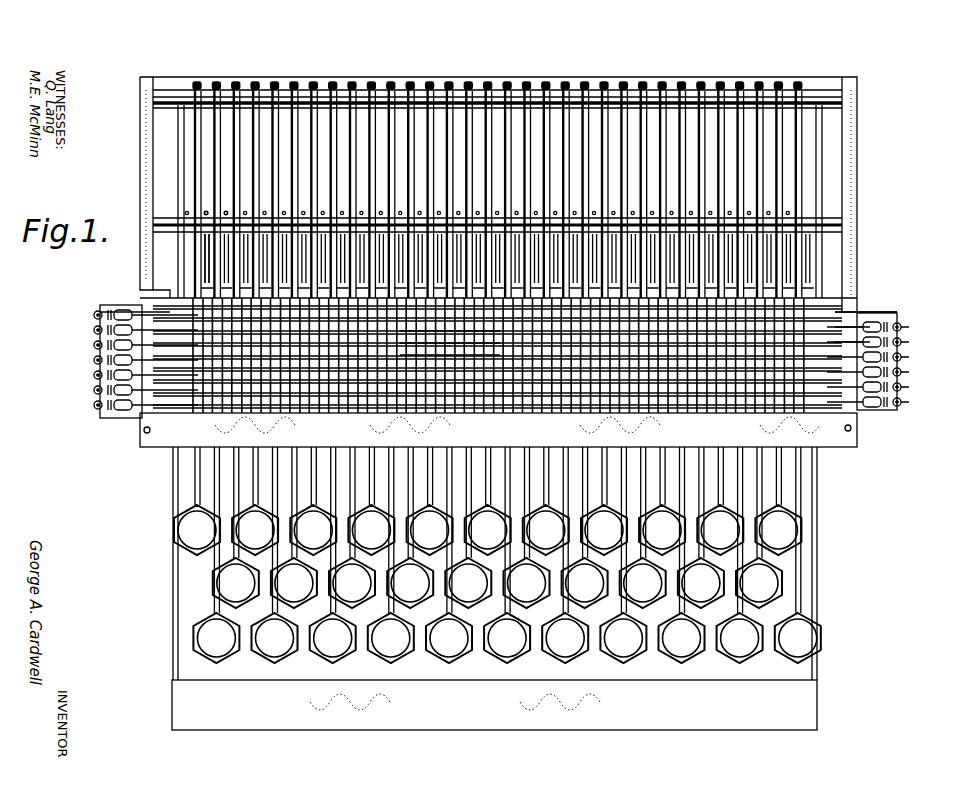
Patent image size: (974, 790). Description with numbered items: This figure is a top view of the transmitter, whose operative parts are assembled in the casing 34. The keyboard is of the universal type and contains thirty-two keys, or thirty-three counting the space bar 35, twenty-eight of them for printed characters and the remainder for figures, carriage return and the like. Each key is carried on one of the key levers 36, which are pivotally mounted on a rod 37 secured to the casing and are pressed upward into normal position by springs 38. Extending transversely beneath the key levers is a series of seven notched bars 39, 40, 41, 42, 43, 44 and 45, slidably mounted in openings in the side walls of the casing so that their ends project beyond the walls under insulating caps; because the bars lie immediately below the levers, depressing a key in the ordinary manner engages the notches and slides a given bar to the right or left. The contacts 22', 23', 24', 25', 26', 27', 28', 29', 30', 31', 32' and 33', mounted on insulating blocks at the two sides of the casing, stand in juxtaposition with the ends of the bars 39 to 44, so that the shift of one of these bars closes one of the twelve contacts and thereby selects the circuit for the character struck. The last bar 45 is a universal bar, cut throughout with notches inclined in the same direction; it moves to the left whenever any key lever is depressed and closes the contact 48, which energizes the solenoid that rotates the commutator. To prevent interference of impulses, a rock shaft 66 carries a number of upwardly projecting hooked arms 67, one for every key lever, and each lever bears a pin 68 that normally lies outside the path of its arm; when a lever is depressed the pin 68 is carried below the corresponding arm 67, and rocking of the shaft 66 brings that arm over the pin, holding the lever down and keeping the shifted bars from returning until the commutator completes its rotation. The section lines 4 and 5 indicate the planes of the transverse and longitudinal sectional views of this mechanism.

The section line 4— 4 is at (187, 28).
The section line 5— 5 is at (95, 321).
The contact 22' is at (120, 421).
The contact 23' is at (120, 403).
The contact 24' is at (122, 386).
The contact 25' is at (888, 413).
The contact 26' is at (888, 396).
The contact 27' is at (888, 378).
The contact 28' is at (115, 370).
The contact 29' is at (116, 353).
The contact 30' is at (117, 336).
The contact 31' is at (888, 360).
The contact 32' is at (885, 340).
The contact 33' is at (878, 310).
The casing 34 is at (846, 252).
The space bar 35 is at (734, 722).
The key levers 36 is at (442, 85).
The rod 37 is at (832, 90).
The springs 38 is at (515, 82).
The notched bar 39 is at (138, 414).
The notched bar 40 is at (850, 388).
The notched bar 41 is at (497, 357).
The notched bar 42 is at (511, 351).
The notched bar 43 is at (530, 336).
The notched bar 44 is at (135, 292).
The universal bar 45 is at (150, 325).
The contact 48 is at (110, 312).
The rock shaft 66 is at (828, 222).
The hooked arms 67 is at (230, 216).
The pin 68 is at (212, 290).